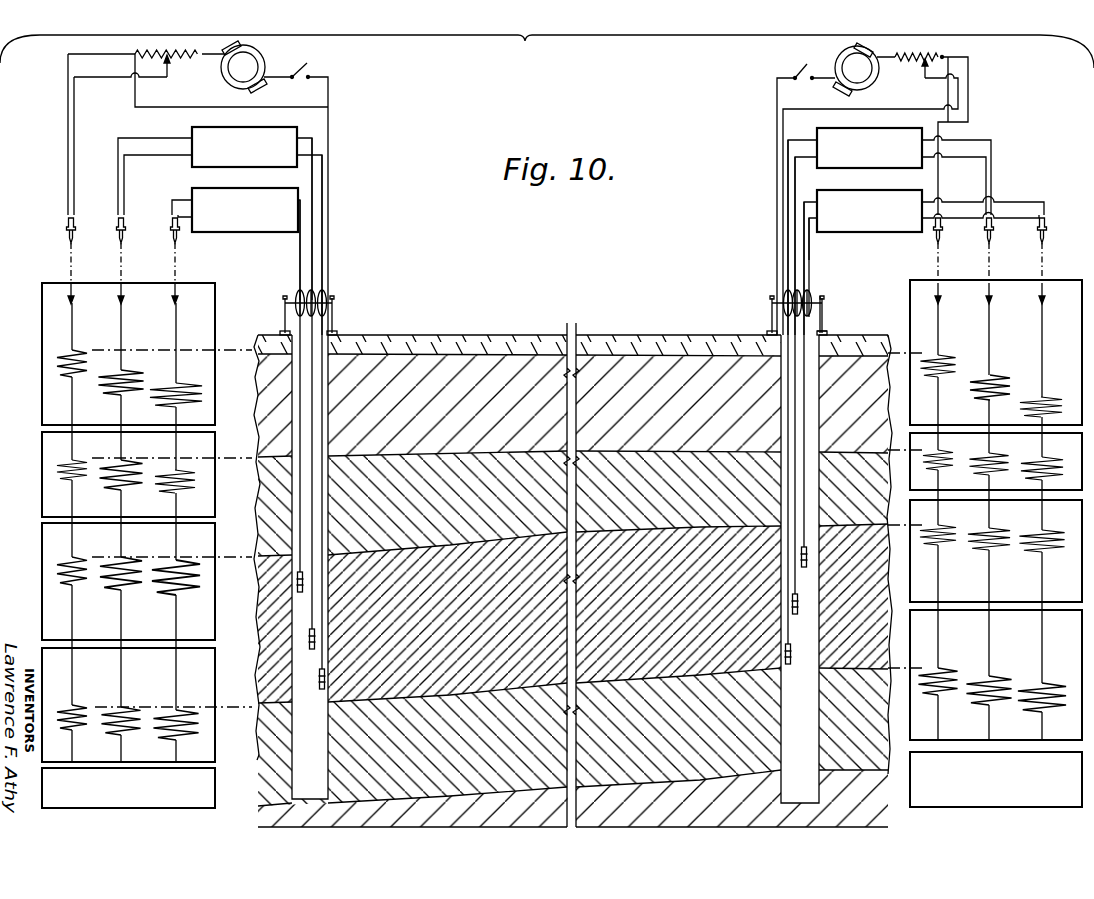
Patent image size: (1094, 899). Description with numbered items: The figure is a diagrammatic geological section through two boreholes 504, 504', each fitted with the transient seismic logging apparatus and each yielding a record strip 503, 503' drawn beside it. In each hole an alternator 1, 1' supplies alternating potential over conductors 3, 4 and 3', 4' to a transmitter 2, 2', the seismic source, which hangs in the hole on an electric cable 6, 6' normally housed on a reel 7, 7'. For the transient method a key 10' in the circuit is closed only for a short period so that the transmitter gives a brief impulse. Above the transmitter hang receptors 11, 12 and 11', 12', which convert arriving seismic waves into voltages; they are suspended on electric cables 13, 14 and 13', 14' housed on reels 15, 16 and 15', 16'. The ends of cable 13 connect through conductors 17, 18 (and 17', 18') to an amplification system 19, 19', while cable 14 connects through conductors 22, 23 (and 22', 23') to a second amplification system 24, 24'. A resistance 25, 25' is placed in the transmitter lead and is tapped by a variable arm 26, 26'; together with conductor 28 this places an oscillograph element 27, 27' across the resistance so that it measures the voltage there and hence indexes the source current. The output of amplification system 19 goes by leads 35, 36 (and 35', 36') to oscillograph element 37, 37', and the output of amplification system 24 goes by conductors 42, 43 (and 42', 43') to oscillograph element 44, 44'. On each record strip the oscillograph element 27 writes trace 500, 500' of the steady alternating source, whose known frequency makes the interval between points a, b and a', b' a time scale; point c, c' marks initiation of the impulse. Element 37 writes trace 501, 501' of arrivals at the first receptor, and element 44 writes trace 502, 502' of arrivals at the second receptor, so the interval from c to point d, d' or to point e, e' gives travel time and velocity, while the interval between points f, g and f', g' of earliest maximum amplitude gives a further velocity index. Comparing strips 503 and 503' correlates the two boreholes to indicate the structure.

The alternator 1 is at (247, 67).
The alternator 1' is at (856, 69).
The key 10' is at (562, 59).
The transmitter 2 is at (319, 432).
The transmitter 2' is at (815, 402).
The conductor 3 is at (241, 158).
The conductor 3' is at (775, 206).
The conductor 4 is at (328, 206).
The conductor 4' is at (856, 204).
The electric cable 6 is at (339, 314).
The electric cable 6' is at (786, 312).
The reel 7 is at (325, 305).
The reel 7' is at (769, 312).
The receptor 11 is at (275, 401).
The receptor 11' is at (823, 385).
The receptor 12 is at (269, 402).
The receptor 12' is at (772, 388).
The electric cable 13 is at (346, 556).
The electric cable 13' is at (818, 558).
The electric cable 14 is at (297, 315).
The electric cable 14' is at (848, 332).
The reel 15 is at (340, 297).
The reel 15' is at (828, 267).
The reel 16 is at (274, 315).
The reel 16' is at (841, 313).
The conductor 17 is at (328, 219).
The conductor 17' is at (804, 224).
The conductor 18 is at (327, 207).
The conductor 18' is at (807, 246).
The amplification system 19 is at (250, 138).
The amplification system 19' is at (869, 138).
The conductor 22 is at (285, 270).
The conductor 22' is at (826, 240).
The conductor 23 is at (288, 233).
The conductor 23' is at (814, 255).
The amplification system 24 is at (245, 222).
The amplification system 24' is at (869, 223).
The resistance 25 is at (166, 63).
The resistance 25' is at (919, 65).
The variable arm 26 is at (120, 144).
The variable arm 26' is at (953, 136).
The oscillograph element 27 is at (58, 261).
The oscillograph element 27' is at (926, 261).
The conductor 28 is at (68, 194).
The lead 35 is at (143, 176).
The lead 35' is at (972, 167).
The lead 36 is at (158, 185).
The lead 36' is at (973, 184).
The oscillograph element 37 is at (136, 261).
The oscillograph element 37' is at (977, 261).
The conductor 42 is at (170, 217).
The conductor 42' is at (999, 215).
The conductor 43 is at (180, 194).
The conductor 43' is at (993, 195).
The oscillograph element 44 is at (187, 261).
The oscillograph element 44' is at (1028, 261).
The trace 500 is at (94, 532).
The trace 500' is at (964, 521).
The trace 501 is at (144, 532).
The trace 501' is at (1013, 521).
The trace 502 is at (196, 532).
The trace 502' is at (1063, 521).
The record strip 503 is at (127, 545).
The record strip 503' is at (991, 527).
The borehole 504 is at (559, 580).
The borehole 504' is at (573, 575).
The point a is at (53, 419).
The point a' is at (924, 416).
The point b is at (52, 550).
The point b' is at (938, 535).
The point c is at (76, 354).
The point c' is at (948, 355).
The point d is at (124, 374).
The point d' is at (999, 377).
The point e is at (176, 387).
The point e' is at (1047, 397).
The point f is at (131, 547).
The point f' is at (1000, 533).
The point g is at (193, 559).
The point g' is at (1049, 553).